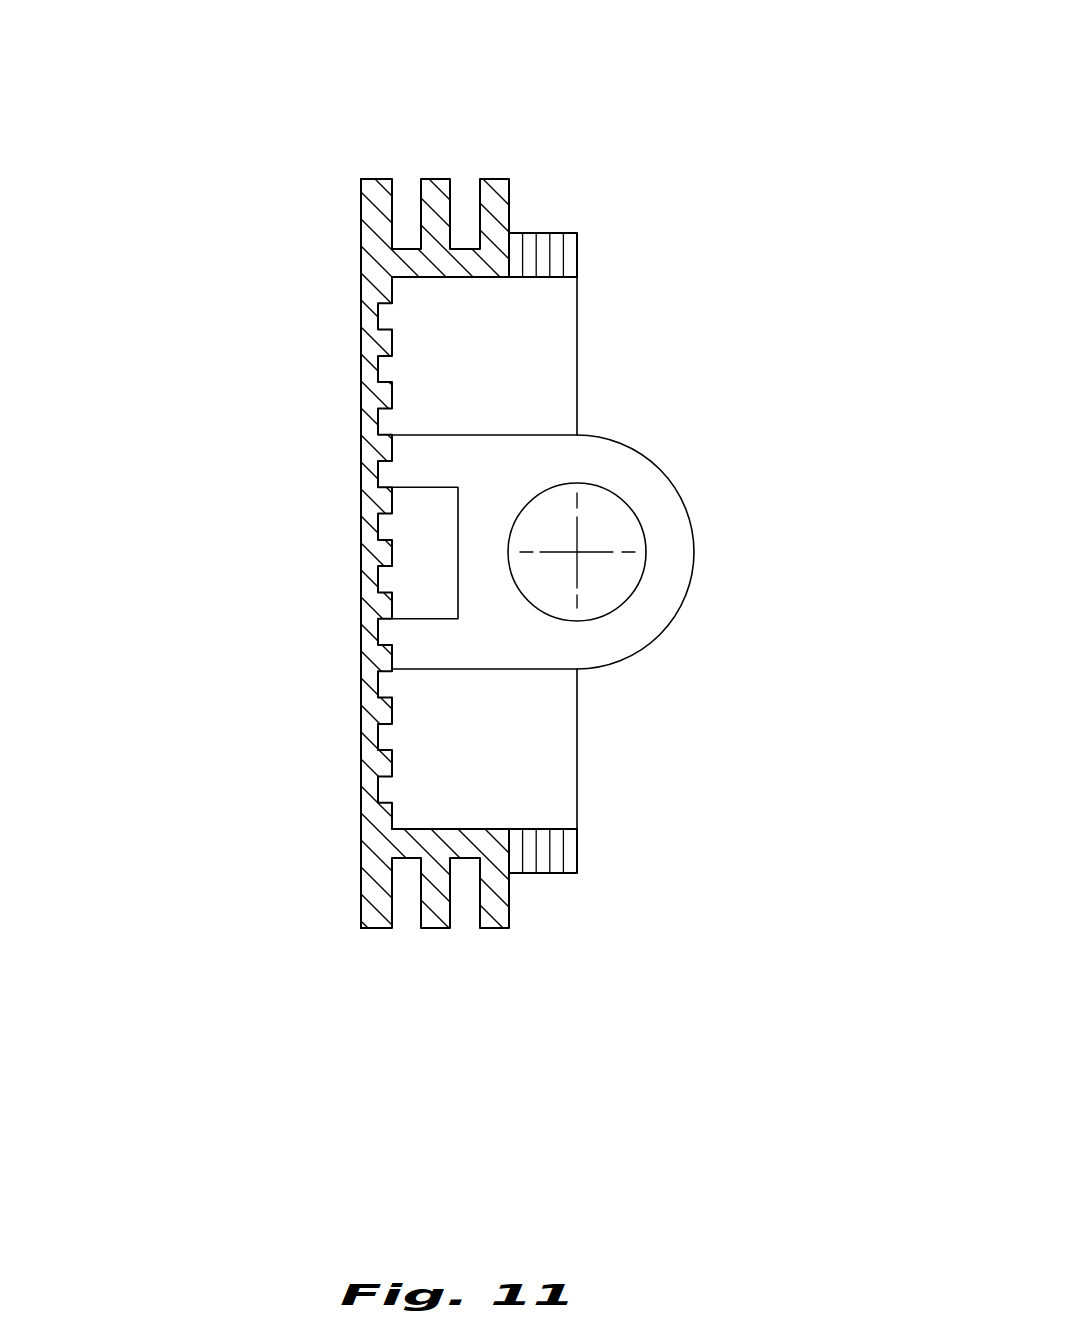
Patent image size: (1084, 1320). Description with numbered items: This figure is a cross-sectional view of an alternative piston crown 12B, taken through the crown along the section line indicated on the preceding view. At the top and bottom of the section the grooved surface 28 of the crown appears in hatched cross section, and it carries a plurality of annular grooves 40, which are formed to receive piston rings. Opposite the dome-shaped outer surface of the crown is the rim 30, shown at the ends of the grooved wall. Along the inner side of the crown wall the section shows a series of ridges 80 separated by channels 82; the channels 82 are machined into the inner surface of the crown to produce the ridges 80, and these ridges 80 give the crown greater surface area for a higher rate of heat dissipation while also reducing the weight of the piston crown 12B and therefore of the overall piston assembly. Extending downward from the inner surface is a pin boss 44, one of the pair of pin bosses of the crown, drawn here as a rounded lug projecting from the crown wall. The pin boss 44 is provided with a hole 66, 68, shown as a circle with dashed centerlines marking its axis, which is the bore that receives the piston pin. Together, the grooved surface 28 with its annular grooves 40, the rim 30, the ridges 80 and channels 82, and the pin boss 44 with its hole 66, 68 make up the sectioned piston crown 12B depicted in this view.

The piston crown 12B is at (284, 294).
The annular grooves 40 is at (466, 249).
The grooved surface 28 is at (423, 971).
The rim 30 is at (545, 231).
The channels 82 is at (383, 432).
The ridges 80 is at (393, 762).
The pin boss 44 is at (660, 637).
The hole 66 is at (577, 552).
The hole 68 is at (577, 550).